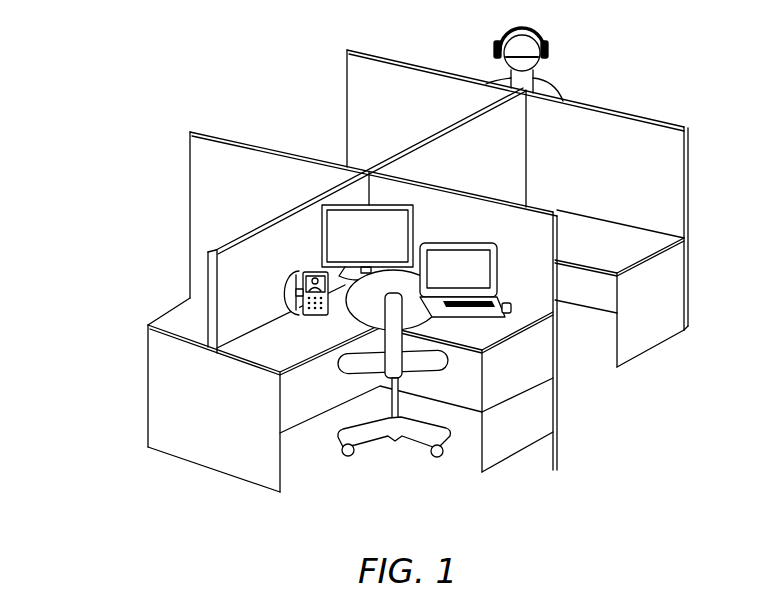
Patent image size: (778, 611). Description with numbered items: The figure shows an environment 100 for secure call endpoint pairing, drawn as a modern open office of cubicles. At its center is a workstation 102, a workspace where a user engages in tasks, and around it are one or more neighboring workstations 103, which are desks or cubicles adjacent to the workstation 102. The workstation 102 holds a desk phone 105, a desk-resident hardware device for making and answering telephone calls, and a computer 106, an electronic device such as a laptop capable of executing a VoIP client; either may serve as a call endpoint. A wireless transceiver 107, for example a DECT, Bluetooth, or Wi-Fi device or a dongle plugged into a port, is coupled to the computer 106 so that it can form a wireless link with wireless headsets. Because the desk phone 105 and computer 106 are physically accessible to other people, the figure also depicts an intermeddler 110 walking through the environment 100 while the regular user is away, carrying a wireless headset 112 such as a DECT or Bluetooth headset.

The environment 100 is at (663, 490).
The workstation 102 is at (343, 495).
The neighboring workstations 103 is at (603, 403).
The desk phone 105 is at (314, 272).
The computer 106 is at (472, 243).
The wireless transceiver 107 is at (512, 303).
The intermeddler 110 is at (560, 86).
The wireless headset 112 is at (499, 44).